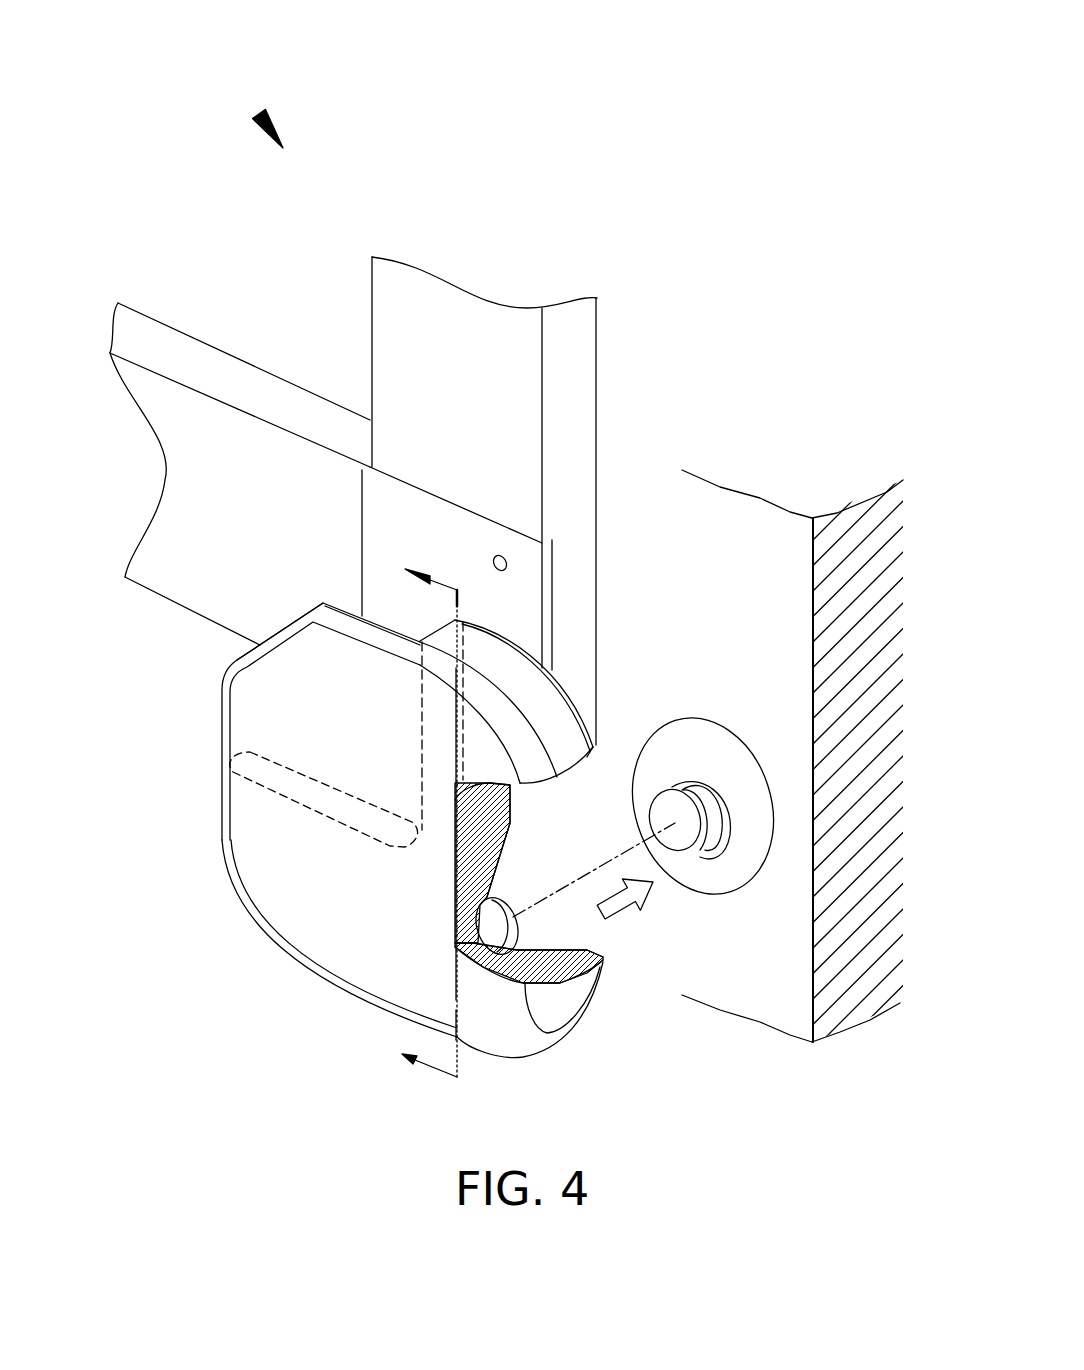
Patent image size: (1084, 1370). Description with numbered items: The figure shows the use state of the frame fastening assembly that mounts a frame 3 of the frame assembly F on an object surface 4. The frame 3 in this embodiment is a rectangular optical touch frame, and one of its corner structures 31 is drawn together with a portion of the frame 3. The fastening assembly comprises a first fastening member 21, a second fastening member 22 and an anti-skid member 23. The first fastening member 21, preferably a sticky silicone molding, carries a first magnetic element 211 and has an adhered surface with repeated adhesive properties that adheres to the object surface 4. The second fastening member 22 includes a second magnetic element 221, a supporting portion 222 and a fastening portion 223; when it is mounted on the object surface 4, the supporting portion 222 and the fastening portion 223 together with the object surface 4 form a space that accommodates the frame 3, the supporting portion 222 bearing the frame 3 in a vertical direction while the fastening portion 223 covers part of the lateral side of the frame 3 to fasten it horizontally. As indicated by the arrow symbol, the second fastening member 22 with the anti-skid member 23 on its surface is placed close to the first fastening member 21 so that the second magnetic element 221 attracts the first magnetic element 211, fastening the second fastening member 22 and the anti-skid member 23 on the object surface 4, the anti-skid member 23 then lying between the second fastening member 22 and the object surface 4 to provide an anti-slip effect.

The frame assembly F is at (260, 112).
The frame 3 is at (222, 492).
The corner structure 31 is at (503, 592).
The object surface 4 is at (727, 513).
The first fastening member 21 is at (698, 708).
The first magnetic element 211 is at (680, 835).
The second fastening member 22 is at (237, 917).
The second magnetic element 221 is at (457, 927).
The supporting portion 222 is at (243, 752).
The fastening portion 223 is at (237, 662).
The anti-skid member 23 is at (553, 687).